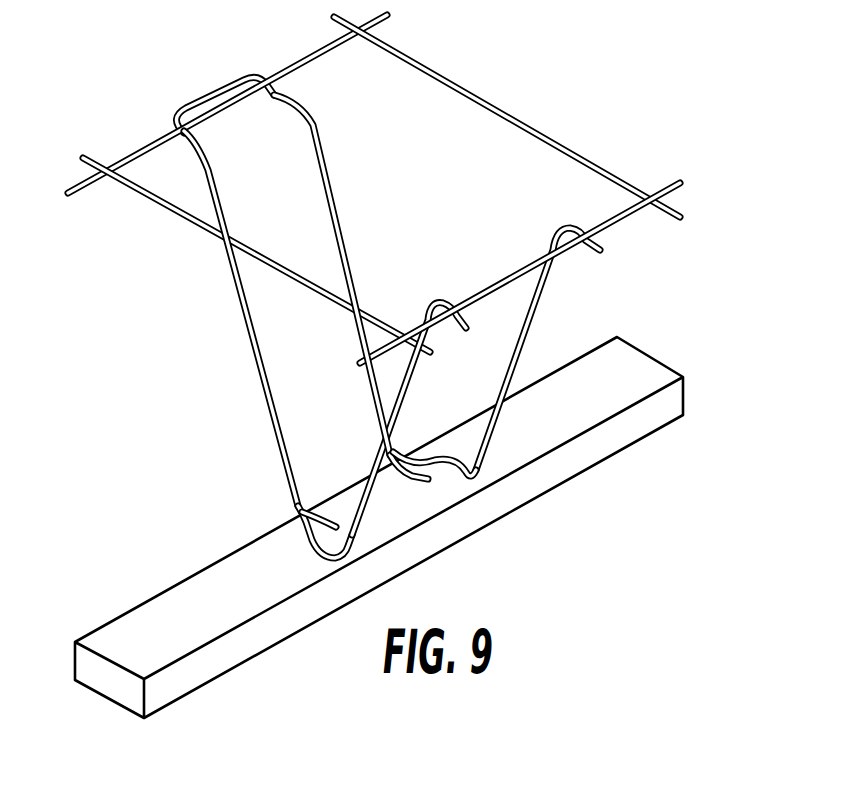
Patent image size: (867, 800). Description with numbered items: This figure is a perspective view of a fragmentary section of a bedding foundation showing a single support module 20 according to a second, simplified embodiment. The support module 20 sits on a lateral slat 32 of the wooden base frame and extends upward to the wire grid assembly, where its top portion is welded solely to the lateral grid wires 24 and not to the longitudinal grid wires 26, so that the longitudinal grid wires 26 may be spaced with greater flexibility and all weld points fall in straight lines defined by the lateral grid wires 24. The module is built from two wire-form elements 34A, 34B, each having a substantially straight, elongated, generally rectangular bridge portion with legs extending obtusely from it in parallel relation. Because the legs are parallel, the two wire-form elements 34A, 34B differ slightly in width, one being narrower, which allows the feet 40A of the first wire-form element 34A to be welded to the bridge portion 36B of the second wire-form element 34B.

The support module 20 is at (386, 295).
The lateral grid wire 24 is at (626, 215).
The longitudinal grid wire 26 is at (516, 120).
The lateral slat 32 is at (641, 375).
The first wire-form element 34A is at (226, 323).
The second wire-form element 34B is at (574, 298).
The bridge portion 36B is at (387, 483).
The feet 40A is at (323, 528).